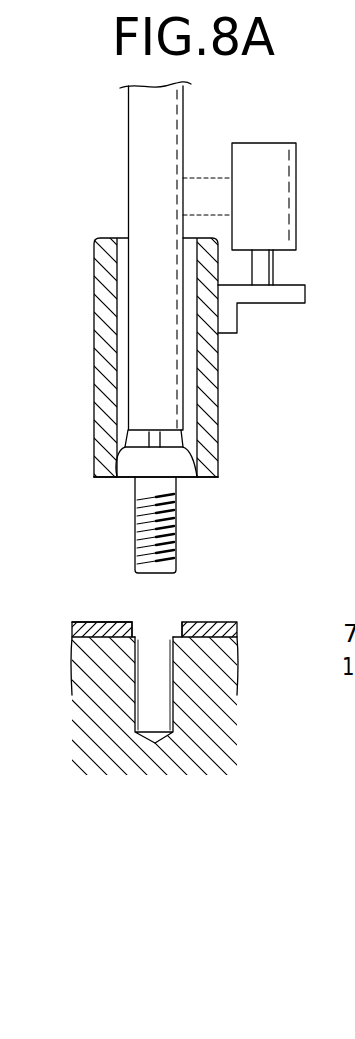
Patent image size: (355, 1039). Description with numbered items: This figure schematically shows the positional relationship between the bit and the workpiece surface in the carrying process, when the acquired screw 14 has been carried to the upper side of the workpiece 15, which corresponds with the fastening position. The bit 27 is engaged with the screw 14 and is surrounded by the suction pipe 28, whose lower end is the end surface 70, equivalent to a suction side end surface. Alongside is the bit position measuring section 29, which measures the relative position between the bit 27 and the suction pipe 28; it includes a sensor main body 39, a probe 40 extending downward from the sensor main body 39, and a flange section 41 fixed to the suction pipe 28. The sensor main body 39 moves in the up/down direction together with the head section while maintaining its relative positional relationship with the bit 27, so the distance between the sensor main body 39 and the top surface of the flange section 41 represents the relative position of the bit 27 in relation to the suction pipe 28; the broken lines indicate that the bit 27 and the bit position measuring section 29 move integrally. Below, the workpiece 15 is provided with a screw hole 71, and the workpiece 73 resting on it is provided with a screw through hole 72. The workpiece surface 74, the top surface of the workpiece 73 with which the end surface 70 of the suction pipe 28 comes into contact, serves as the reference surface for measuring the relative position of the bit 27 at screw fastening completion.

The screw 14 is at (185, 450).
The workpiece 15 is at (72, 662).
The bit 27 is at (128, 151).
The suction pipe 28 is at (94, 294).
The bit position measuring section 29 is at (269, 219).
The sensor main body 39 is at (297, 187).
The probe 40 is at (274, 267).
The flange section 41 is at (283, 304).
The end surface 70 is at (103, 479).
The screw hole 71 is at (143, 630).
The screw through hole 72 is at (174, 621).
The workpiece 73 is at (72, 628).
The workpiece surface 74 is at (90, 622).